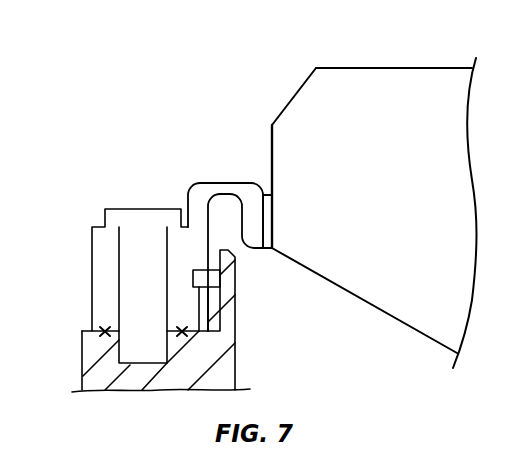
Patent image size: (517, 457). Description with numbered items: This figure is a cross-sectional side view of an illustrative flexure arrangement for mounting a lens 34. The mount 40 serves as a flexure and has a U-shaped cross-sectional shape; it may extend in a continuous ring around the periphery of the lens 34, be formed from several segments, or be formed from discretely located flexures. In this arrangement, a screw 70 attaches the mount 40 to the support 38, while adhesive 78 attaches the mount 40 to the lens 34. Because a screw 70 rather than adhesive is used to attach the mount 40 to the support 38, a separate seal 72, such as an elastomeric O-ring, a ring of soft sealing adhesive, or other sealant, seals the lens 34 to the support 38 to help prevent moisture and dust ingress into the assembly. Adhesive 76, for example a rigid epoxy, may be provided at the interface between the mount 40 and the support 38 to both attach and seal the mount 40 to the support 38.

The lens 34 is at (388, 78).
The mount 40 is at (222, 183).
The screw 70 is at (143, 212).
The seal 72 is at (200, 288).
The adhesive 76 is at (103, 331).
The adhesive 78 is at (263, 250).
The support 38 is at (236, 359).